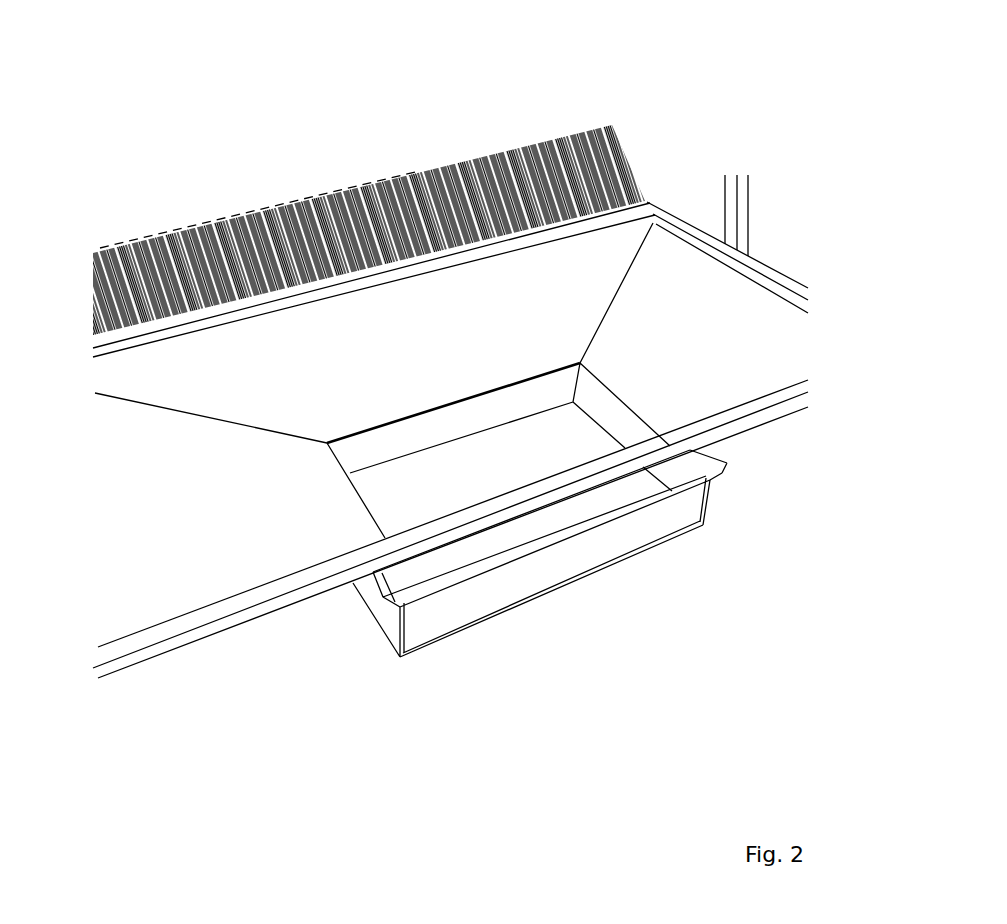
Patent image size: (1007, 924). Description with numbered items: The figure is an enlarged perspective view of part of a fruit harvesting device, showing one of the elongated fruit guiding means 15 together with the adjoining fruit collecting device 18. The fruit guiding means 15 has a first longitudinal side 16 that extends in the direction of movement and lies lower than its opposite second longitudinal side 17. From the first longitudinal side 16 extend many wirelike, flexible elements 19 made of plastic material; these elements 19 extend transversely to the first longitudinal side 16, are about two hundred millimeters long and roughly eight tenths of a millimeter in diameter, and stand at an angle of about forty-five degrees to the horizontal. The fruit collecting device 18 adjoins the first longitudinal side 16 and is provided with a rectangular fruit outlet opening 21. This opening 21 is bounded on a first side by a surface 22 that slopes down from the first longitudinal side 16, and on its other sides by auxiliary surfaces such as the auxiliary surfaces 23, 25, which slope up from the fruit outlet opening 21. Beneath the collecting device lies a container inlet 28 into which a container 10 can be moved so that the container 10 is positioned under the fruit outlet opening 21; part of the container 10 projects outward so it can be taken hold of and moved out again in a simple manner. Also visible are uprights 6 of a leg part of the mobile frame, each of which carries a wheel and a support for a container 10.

The upright 6 is at (743, 197).
The container 10 is at (540, 568).
The fruit guiding means 15 is at (390, 210).
The first longitudinal side 16 is at (202, 333).
The second longitudinal side 17 is at (163, 223).
The fruit collecting device 18 is at (768, 252).
The wirelike flexible element 19 is at (497, 153).
The fruit outlet opening 21 is at (570, 437).
The surface 22 is at (613, 257).
The auxiliary surface 23 is at (763, 325).
The auxiliary surface 25 is at (450, 525).
The container inlet 28 is at (713, 508).